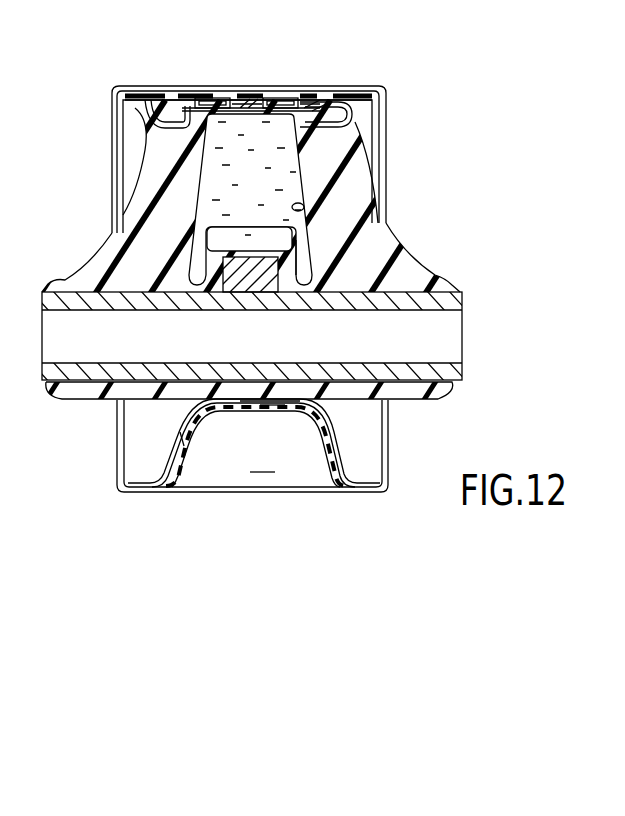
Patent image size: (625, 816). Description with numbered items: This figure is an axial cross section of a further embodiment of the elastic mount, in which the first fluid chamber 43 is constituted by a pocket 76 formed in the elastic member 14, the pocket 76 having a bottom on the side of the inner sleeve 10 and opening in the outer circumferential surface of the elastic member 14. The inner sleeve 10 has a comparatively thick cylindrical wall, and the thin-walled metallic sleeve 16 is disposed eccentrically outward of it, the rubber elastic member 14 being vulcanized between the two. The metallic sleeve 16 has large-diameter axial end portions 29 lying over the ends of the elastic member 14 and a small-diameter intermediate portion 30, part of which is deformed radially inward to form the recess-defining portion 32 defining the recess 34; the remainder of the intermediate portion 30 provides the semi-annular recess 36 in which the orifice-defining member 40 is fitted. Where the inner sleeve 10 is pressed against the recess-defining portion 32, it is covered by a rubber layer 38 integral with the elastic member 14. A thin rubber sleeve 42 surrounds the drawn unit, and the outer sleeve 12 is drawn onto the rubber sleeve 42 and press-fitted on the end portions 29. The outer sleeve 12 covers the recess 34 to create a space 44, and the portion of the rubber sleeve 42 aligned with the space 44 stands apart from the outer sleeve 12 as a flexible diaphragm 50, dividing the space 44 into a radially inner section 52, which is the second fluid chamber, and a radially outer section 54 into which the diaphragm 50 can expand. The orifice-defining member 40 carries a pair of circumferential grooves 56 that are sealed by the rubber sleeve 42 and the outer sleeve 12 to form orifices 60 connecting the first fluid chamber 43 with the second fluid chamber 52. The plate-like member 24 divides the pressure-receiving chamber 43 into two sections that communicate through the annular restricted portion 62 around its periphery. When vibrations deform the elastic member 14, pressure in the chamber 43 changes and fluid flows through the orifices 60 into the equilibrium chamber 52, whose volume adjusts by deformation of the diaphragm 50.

The inner sleeve 10 is at (378, 298).
The outer sleeve 12 is at (151, 492).
The elastic member 14 is at (113, 243).
The metallic sleeve 16 is at (348, 114).
The plate-like member 24 is at (257, 294).
The large-diameter axial end portions 29 is at (141, 91).
The small-diameter intermediate portion 30 is at (180, 112).
The recess-defining portion 32 is at (335, 443).
The recess 34 is at (188, 440).
The semi-annular recess 36 is at (310, 110).
The rubber layer 38 is at (176, 398).
The orifice-defining member 40 is at (247, 99).
The rubber sleeve 42 is at (138, 92).
The first fluid chamber 43 is at (264, 196).
The space 44 is at (362, 503).
The flexible diaphragm 50 is at (243, 413).
The radially inner section 52 is at (273, 408).
The radially outer section 54 is at (262, 472).
The circumferential grooves 56 is at (226, 100).
The orifices 60 is at (200, 98).
The restricted portion 62 is at (303, 257).
The pocket 76 is at (305, 208).